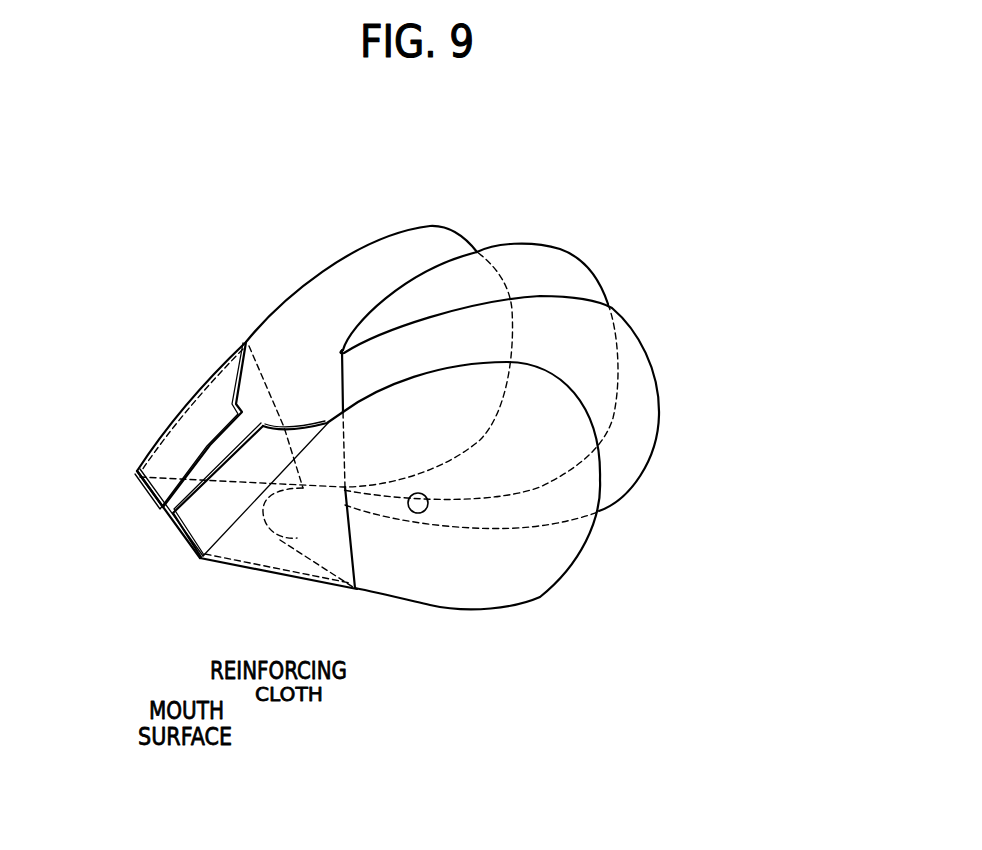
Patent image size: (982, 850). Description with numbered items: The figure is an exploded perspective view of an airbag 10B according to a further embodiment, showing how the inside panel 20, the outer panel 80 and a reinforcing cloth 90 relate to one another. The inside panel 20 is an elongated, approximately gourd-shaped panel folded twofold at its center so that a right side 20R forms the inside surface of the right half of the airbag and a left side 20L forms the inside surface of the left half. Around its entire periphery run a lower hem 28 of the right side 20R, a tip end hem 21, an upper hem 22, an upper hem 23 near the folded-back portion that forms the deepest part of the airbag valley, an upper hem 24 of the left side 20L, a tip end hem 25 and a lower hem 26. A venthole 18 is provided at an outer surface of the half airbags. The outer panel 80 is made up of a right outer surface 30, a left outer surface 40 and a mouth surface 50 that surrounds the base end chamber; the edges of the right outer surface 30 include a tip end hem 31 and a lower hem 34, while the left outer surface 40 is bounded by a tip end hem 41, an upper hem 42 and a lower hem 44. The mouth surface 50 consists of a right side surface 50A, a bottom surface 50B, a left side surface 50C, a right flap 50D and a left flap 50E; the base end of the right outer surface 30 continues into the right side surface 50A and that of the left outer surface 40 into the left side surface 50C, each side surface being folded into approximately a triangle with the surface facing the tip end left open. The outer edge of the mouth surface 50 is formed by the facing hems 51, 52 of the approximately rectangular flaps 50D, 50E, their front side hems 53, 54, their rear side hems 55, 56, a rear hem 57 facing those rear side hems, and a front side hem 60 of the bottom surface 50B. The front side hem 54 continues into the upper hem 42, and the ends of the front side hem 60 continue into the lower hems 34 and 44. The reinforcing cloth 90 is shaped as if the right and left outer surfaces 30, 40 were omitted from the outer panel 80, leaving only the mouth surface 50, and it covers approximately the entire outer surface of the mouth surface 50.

The airbag 10B is at (640, 607).
The venthole 18 is at (430, 512).
The inside panel 20 is at (597, 255).
The left side 20L is at (547, 263).
The right side 20R is at (643, 368).
The tip end hem 21 is at (658, 405).
The upper hem 22 is at (456, 314).
The upper hem 23 is at (350, 348).
The upper hem 24 is at (430, 269).
The tip end hem 25 is at (607, 299).
The lower hem 26 is at (527, 497).
The lower hem 28 is at (611, 504).
The right outer surface 30 is at (544, 583).
The tip end hem 31 is at (590, 538).
The lower hem 34 is at (446, 614).
The left outer surface 40 is at (366, 229).
The tip end hem 41 is at (502, 283).
The upper hem 42 is at (314, 284).
The lower hem 44 is at (458, 464).
The mouth surface 50 is at (205, 573).
The right side surface 50A is at (238, 542).
The bottom surface 50B is at (173, 558).
The left side surface 50C is at (172, 416).
The right flap 50D is at (273, 453).
The left flap 50E is at (214, 388).
The facing hem 51 is at (188, 488).
The facing hem 52 is at (200, 467).
The front side hem 53 is at (284, 425).
The front side hem 54 is at (242, 378).
The rear side hem 55 is at (177, 539).
The rear side hem 56 is at (138, 478).
The rear hem 57 is at (157, 512).
The front side hem 60 is at (296, 538).
The outer panel 80 is at (506, 634).
The reinforcing cloth 90 is at (272, 577).